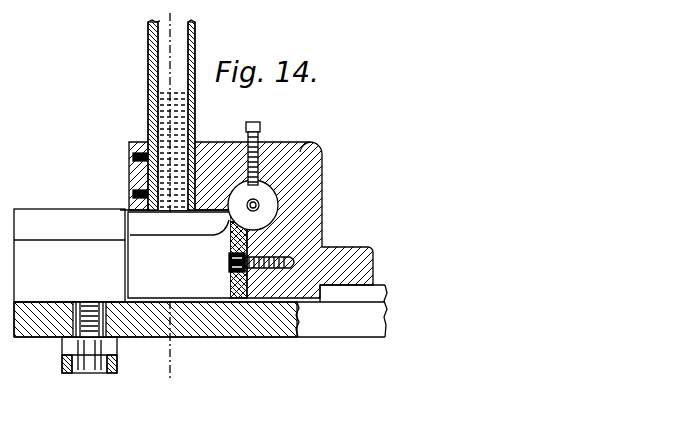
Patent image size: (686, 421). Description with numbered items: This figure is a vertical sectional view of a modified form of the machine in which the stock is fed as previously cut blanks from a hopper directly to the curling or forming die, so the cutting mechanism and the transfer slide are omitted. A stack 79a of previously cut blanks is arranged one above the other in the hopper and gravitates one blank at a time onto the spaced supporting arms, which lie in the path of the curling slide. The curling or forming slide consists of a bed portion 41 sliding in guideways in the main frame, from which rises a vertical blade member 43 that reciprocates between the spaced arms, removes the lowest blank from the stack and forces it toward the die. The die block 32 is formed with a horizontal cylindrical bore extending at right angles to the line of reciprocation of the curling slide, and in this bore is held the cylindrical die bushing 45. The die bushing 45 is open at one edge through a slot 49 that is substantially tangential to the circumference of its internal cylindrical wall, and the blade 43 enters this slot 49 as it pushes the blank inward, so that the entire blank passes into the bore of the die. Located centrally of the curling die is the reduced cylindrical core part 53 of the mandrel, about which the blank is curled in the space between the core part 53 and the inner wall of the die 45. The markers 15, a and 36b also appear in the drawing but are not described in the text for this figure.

The axis / direction arrow 15 is at (185, 16).
The stack of previously cut blanks 79a is at (148, 90).
The die block 32 is at (231, 182).
The pin a is at (246, 150).
The cylindrical die bushing 45 is at (288, 172).
The reduced cylindrical core part 53 is at (260, 207).
The vertical blade member 43 is at (57, 222).
The slot 49 is at (179, 255).
The set screw 36b is at (229, 266).
The bed portion 41 is at (249, 340).